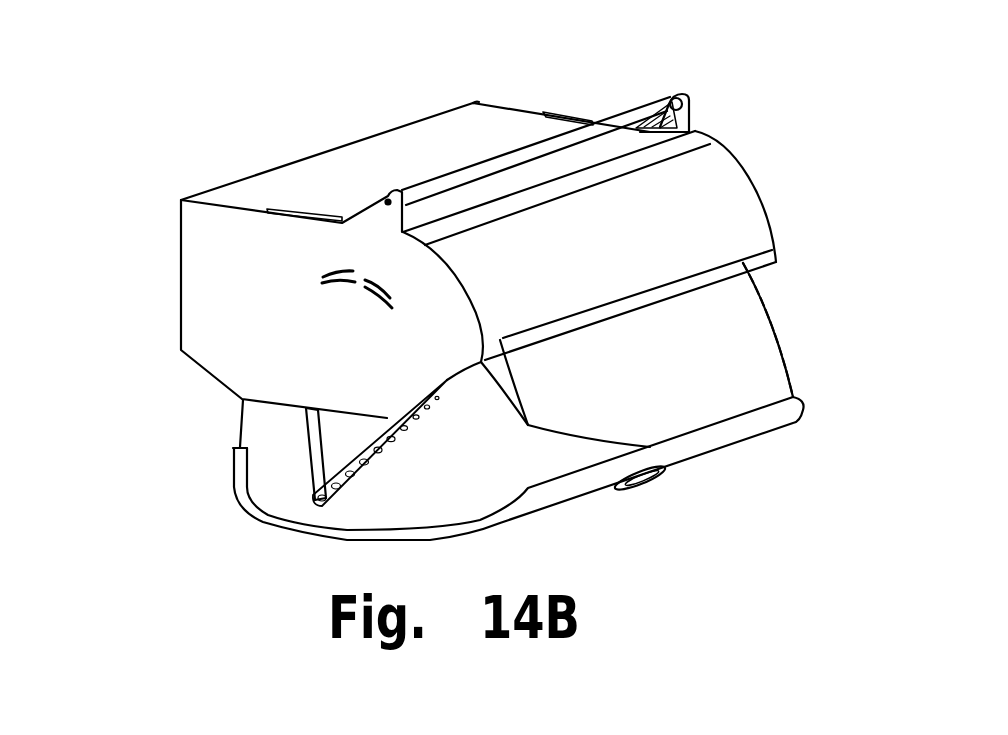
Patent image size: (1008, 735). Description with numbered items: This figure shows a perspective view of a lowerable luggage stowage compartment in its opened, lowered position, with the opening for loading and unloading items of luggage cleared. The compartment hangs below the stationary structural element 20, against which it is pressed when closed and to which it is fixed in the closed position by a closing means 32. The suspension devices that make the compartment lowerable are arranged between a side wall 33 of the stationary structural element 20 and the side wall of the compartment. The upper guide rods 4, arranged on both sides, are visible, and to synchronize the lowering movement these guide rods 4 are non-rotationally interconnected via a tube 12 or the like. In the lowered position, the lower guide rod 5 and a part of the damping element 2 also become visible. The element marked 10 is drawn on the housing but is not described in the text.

The damping element 2 is at (308, 457).
The upper guide rod 4 is at (659, 105).
The lower guide rod 5 is at (312, 497).
The marking 10 is at (321, 283).
The tube 12 is at (555, 143).
The structural element 20 is at (728, 203).
The closing means 32 is at (650, 488).
The side wall 33 is at (257, 322).